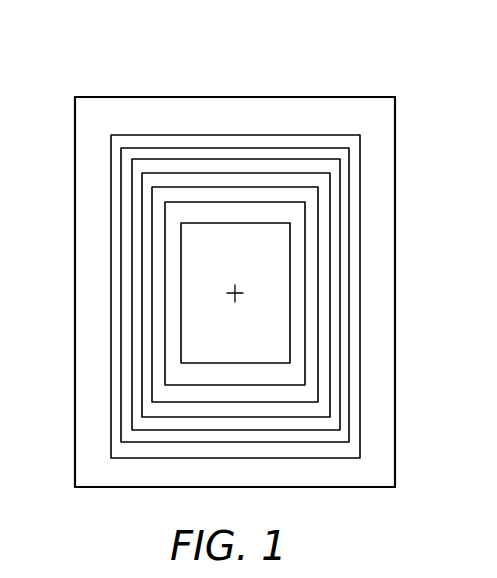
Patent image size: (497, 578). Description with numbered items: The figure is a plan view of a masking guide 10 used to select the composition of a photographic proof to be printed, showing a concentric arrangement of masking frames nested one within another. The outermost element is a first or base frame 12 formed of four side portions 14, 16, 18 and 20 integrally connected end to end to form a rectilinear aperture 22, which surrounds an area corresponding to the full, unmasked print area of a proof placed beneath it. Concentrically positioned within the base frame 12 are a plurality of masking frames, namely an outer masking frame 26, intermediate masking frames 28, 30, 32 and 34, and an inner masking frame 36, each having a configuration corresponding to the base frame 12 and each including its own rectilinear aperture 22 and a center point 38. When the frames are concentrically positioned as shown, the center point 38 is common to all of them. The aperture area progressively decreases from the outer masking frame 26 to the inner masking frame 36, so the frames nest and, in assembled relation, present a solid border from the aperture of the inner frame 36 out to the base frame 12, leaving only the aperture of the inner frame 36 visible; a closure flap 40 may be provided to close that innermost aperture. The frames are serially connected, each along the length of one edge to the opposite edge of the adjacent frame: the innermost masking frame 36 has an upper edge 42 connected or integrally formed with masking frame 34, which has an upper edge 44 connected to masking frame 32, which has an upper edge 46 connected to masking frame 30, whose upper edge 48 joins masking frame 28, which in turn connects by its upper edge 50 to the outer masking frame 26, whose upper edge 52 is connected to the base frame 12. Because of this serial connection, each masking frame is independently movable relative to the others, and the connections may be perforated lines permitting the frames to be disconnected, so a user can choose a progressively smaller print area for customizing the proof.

The masking guide 10 is at (108, 85).
The base frame 12 is at (75, 145).
The side portion 14 is at (177, 110).
The side portion 16 is at (387, 232).
The side portion 18 is at (138, 473).
The side portion 20 is at (82, 230).
The rectilinear aperture 22 is at (117, 323).
The outer masking frame 26 is at (357, 265).
The intermediate masking frame 28 is at (345, 292).
The intermediate masking frame 30 is at (335, 318).
The intermediate masking frame 32 is at (325, 330).
The intermediate masking frame 34 is at (313, 345).
The inner masking frame 36 is at (298, 365).
The center point 38 is at (238, 295).
The closure flap 40 is at (215, 338).
The upper edge 42 is at (253, 203).
The upper edge 44 is at (200, 186).
The upper edge 46 is at (312, 177).
The upper edge 48 is at (290, 164).
The band 50 is at (260, 152).
The upper edge 52 is at (228, 137).